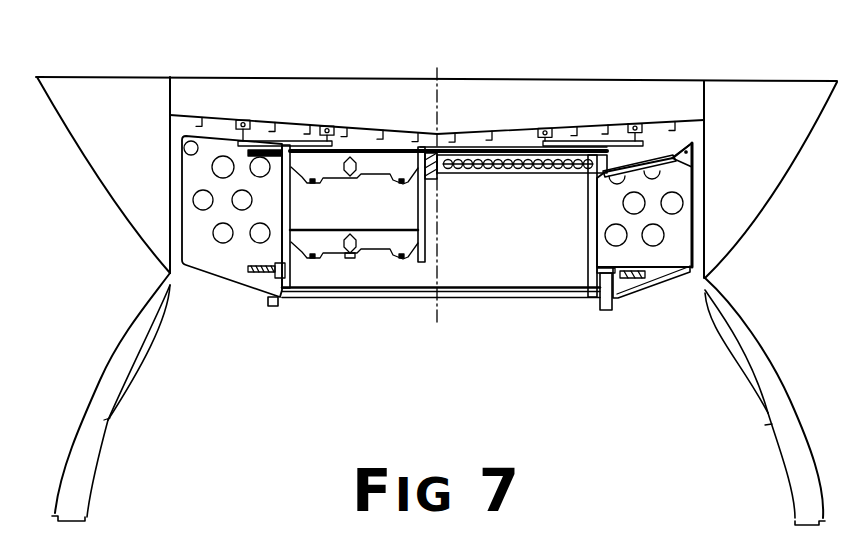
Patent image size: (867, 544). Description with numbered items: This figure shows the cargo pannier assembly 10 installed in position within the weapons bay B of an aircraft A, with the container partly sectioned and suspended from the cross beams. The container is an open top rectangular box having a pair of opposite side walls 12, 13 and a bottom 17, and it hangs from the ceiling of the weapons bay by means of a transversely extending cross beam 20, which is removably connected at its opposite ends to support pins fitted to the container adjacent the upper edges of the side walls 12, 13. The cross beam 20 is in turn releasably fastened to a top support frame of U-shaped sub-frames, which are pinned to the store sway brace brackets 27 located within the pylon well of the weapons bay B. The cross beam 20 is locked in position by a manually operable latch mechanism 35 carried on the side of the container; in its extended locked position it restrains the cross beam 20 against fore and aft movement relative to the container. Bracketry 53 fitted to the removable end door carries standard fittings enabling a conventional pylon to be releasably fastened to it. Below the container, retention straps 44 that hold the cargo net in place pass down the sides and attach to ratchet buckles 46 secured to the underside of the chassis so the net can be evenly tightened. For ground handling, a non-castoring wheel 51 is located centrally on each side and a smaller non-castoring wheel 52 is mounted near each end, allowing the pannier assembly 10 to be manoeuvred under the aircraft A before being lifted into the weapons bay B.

The cargo pannier assembly 10 is at (388, 305).
The side wall 12 is at (182, 223).
The side wall 13 is at (694, 228).
The bottom 17 is at (525, 299).
The cross beam 20 is at (504, 157).
The store sway brace brackets 27 is at (243, 121).
The latch mechanism 35 is at (692, 168).
The retention strap 44 is at (658, 276).
The ratchet buckle 46 is at (633, 280).
The non-castoring wheel 51 is at (270, 306).
The non-castoring wheel 52 is at (605, 313).
The bracketry 53 is at (432, 152).
The aircraft A is at (753, 95).
The weapons bay B is at (691, 130).